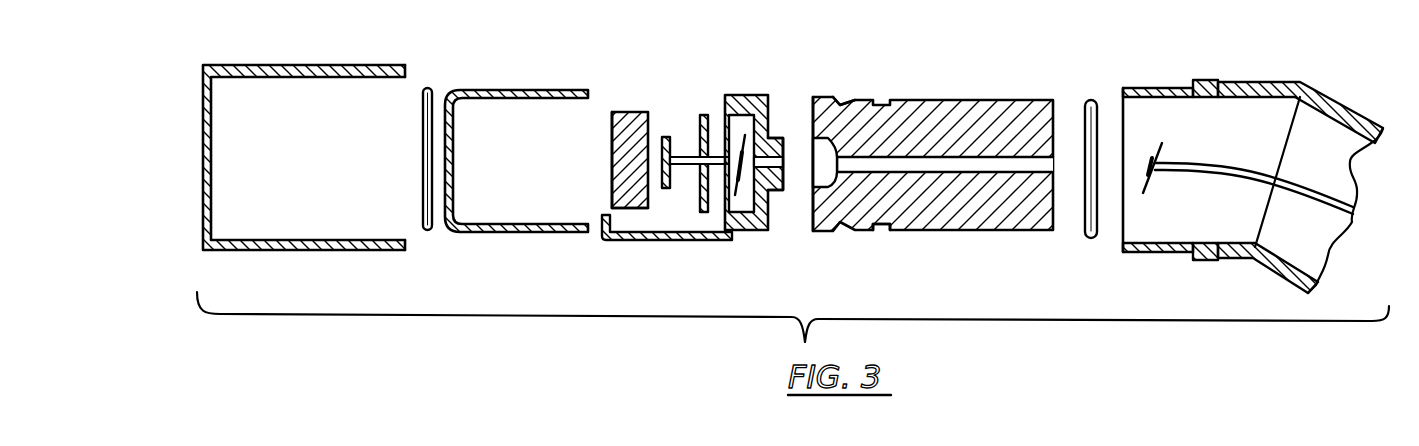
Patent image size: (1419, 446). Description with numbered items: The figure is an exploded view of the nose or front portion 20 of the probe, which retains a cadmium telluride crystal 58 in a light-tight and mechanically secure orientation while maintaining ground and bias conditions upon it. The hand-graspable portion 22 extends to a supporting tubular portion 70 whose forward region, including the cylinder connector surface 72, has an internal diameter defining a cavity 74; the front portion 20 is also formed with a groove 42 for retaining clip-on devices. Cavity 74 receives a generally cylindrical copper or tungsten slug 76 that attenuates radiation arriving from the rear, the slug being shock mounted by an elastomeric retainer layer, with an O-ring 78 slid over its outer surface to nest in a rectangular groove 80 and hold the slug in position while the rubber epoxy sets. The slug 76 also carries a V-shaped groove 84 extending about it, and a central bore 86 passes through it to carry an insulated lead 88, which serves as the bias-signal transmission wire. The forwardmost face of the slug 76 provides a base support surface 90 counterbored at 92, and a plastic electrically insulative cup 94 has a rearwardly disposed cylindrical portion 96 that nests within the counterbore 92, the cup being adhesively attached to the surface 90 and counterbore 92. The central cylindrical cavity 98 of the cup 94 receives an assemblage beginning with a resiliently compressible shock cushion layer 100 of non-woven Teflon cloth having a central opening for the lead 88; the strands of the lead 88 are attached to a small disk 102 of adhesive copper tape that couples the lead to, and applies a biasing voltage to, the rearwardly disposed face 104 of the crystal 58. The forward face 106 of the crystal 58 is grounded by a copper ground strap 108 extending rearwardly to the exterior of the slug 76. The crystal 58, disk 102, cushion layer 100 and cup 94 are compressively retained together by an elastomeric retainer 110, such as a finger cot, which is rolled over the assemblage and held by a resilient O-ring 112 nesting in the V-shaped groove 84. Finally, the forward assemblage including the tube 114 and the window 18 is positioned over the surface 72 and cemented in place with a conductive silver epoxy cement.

The window 18 is at (204, 84).
The tube 114 is at (332, 66).
The resilient O-ring 112 is at (428, 88).
The elastomeric retainer 110 is at (508, 88).
The forward face of crystal 106 is at (612, 120).
The cadmium telluride crystal 58 is at (632, 112).
The rearwardly disposed face of crystal 104 is at (648, 197).
The disk of adhesive copper tape 102 is at (666, 138).
The shock cushion layer 100 is at (701, 115).
The central cylindrical cavity 98 is at (734, 122).
The electrically insulative cup 94 is at (750, 95).
The rearwardly disposed cylindrical portion 96 is at (778, 190).
The copper ground strap 108 is at (648, 240).
The front portion 20 is at (933, 139).
The slug 76 is at (947, 108).
The central bore 86 is at (1043, 168).
The counterbore 92 is at (818, 181).
The base support surface 90 is at (812, 115).
The V-shaped groove 84 is at (840, 105).
The rectangular groove 80 is at (877, 223).
The O-ring 78 is at (1090, 98).
The hand-graspable portion 22 is at (1258, 164).
The cylinder connector surface 72 is at (1155, 87).
The groove 42 is at (1220, 82).
The supporting tubular portion 70 is at (1273, 80).
The cavity 74 is at (1143, 226).
The insulated lead 88 is at (1203, 167).